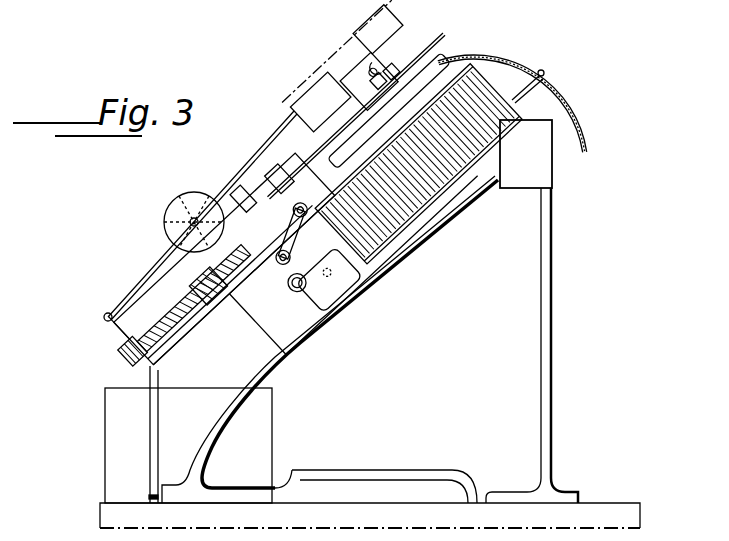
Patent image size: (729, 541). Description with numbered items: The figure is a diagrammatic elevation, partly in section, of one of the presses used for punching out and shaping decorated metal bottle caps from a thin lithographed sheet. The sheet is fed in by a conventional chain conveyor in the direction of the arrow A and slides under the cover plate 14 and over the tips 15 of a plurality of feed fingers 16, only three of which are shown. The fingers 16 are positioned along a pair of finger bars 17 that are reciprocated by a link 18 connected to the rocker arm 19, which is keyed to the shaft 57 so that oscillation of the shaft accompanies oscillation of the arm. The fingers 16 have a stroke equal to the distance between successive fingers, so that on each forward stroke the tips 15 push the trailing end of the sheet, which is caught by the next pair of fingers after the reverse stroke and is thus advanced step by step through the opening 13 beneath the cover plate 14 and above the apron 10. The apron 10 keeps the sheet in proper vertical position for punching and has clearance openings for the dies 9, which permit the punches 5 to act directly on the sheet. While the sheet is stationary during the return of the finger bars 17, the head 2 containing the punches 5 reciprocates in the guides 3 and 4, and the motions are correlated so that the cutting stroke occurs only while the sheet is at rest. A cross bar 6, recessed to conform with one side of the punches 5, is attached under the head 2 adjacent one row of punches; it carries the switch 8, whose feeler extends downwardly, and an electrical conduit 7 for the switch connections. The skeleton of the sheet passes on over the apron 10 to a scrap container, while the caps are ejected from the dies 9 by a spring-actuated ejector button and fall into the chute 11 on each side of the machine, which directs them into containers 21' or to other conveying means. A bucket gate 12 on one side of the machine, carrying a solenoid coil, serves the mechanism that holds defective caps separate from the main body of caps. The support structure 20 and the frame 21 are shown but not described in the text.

The head 2 is at (336, 52).
The guide 3 is at (360, 38).
The guide 4 is at (295, 98).
The punches 5 is at (384, 62).
The cross bar 6 is at (392, 60).
The electrical conduit 7 is at (398, 76).
The switch 8 is at (416, 78).
The die 9 is at (392, 106).
The apron 10 is at (452, 58).
The chute 11 is at (256, 156).
The bucket gate 12 is at (168, 232).
The opening 13 is at (278, 176).
The cover plate 14 is at (245, 190).
The tips 15 is at (234, 206).
The feed fingers 16 is at (240, 242).
The finger bars 17 is at (290, 216).
The link 18 is at (300, 218).
The rocker arm 19 is at (282, 270).
The block 20 is at (332, 292).
The frame 21 is at (370, 311).
The container 21' is at (163, 445).
The shaft 57 is at (297, 292).
The arrow A is at (109, 346).